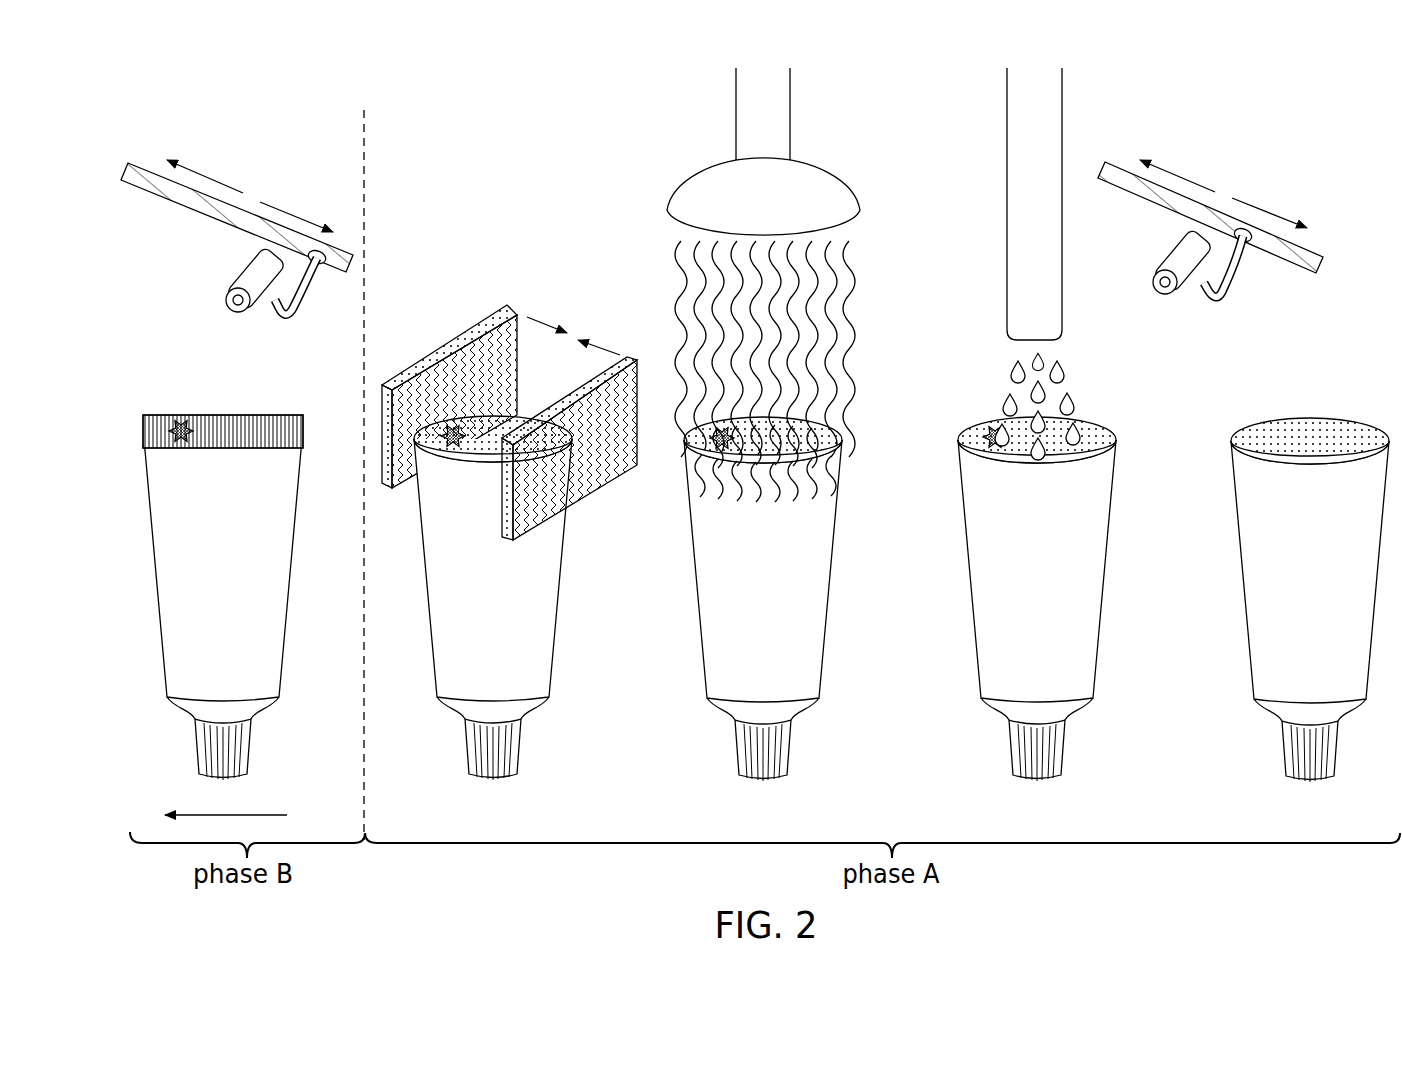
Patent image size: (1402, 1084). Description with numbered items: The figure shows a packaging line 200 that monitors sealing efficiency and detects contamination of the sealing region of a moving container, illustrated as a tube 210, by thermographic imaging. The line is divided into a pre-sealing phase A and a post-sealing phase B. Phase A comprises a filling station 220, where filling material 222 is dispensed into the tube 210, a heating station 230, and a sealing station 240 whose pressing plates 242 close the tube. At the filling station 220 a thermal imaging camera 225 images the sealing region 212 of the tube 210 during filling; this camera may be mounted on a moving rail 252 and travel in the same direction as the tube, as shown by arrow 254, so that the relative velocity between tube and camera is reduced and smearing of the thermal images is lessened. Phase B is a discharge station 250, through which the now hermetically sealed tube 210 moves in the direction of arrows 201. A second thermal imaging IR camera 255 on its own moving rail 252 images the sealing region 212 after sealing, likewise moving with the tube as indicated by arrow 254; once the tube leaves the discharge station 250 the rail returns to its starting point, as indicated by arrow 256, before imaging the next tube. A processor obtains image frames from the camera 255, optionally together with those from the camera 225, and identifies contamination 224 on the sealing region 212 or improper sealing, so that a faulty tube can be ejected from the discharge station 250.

The packaging line 200 is at (520, 133).
The arrows 201 is at (268, 815).
The tube 210 is at (183, 707).
The sealing region 212 is at (272, 415).
The filling station 220 is at (982, 323).
The filling material 222 is at (1060, 373).
The contamination 224 is at (180, 415).
The thermal imaging camera 225 is at (1183, 288).
The heating station 230 is at (877, 292).
The sealing station 240 is at (510, 500).
The pressing plates 242 is at (460, 342).
The discharge station 250 is at (128, 273).
The moving rail 252 is at (150, 165).
The arrow 254 is at (215, 183).
The thermal imaging IR camera 255 is at (230, 283).
The arrow 256 is at (290, 205).